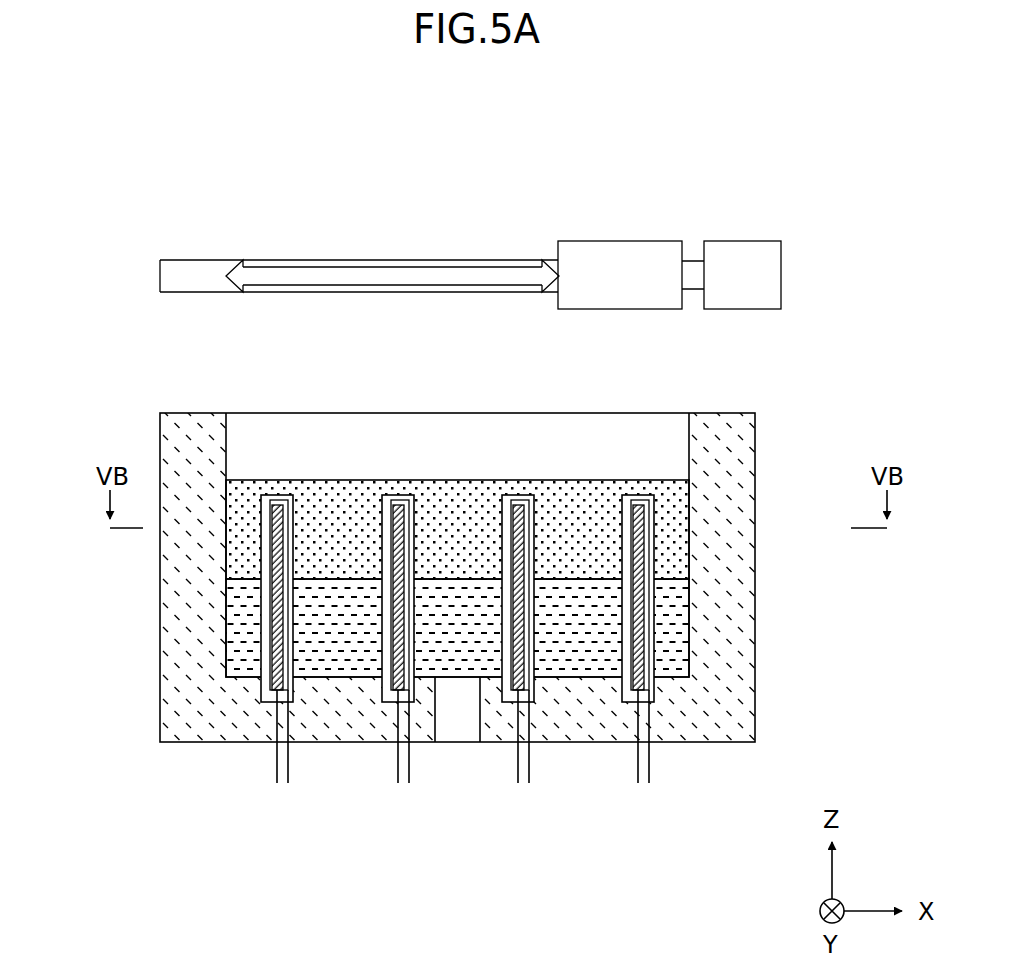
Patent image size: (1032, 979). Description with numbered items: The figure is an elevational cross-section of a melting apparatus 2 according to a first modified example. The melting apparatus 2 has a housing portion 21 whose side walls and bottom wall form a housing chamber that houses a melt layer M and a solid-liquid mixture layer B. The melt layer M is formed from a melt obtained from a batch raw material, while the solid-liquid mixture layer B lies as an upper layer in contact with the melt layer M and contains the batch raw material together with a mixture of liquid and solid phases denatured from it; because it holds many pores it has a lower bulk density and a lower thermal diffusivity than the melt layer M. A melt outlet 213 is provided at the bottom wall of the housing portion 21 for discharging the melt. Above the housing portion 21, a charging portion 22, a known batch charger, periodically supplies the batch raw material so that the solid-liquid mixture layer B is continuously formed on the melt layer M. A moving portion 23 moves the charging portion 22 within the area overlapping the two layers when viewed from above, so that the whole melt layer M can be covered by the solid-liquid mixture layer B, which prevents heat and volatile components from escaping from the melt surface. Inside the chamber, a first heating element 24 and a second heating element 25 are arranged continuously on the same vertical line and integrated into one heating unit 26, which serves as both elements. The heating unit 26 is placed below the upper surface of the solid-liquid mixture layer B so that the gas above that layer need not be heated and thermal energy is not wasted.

The melting apparatus 2 is at (121, 191).
The housing portion 21 is at (156, 676).
The charging portion 22 is at (613, 250).
The moving portion 23 is at (740, 250).
The first heating element 24 is at (262, 548).
The second heating element 25 is at (263, 617).
The heating unit 26 is at (67, 562).
The melt outlet 213 is at (457, 730).
The solid-liquid mixture layer B is at (455, 495).
The melt layer M is at (586, 663).